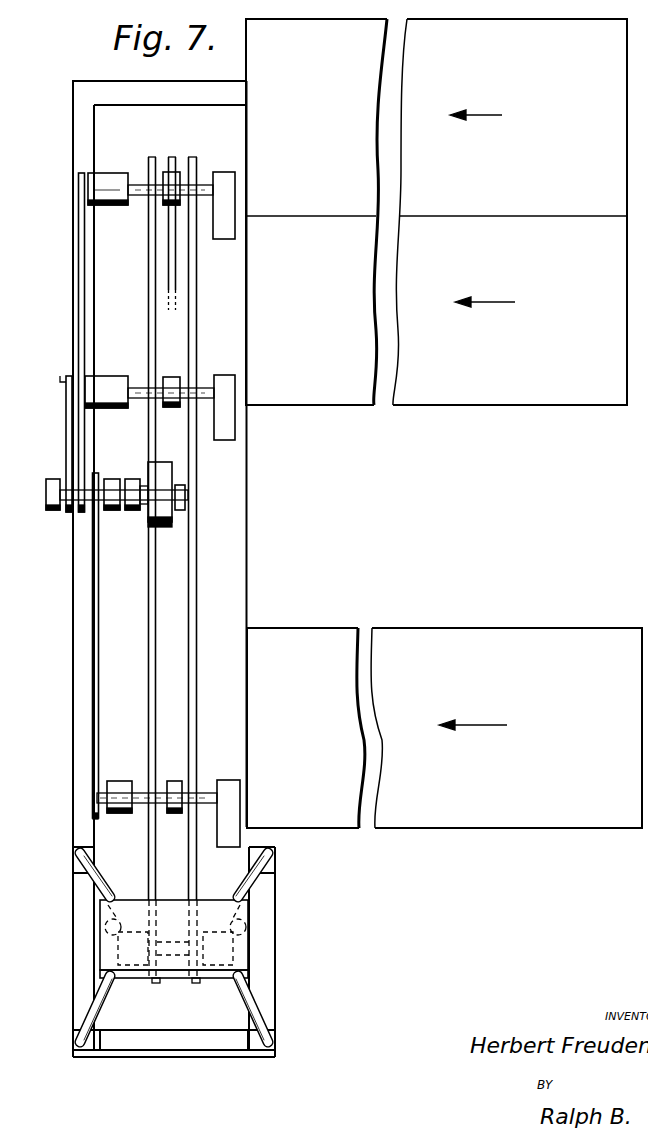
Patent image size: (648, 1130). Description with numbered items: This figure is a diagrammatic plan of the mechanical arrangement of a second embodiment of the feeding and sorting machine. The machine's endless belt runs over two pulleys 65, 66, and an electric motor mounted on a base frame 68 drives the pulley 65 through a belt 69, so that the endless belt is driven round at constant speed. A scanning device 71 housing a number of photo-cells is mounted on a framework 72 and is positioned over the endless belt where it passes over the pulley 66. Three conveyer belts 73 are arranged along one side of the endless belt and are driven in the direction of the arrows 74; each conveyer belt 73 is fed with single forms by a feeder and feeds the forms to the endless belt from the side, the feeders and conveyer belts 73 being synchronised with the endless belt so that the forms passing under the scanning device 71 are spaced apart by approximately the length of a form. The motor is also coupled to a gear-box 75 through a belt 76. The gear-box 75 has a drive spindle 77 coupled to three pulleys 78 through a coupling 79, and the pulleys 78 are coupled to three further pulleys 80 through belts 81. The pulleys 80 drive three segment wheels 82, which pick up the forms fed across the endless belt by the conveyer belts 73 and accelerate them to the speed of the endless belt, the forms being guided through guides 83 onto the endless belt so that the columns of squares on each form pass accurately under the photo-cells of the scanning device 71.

The pulley 65 is at (149, 157).
The pulley 66 is at (160, 983).
The base frame 68 is at (96, 835).
The belt 69 is at (177, 292).
The scanning device 71 is at (174, 962).
The framework 72 is at (252, 890).
The conveyer belts 73 is at (444, 423).
The arrows 74 is at (497, 116).
The gear-box 75 is at (162, 477).
The belt 76 is at (187, 498).
The drive spindle 77 is at (145, 488).
The pulleys 78 is at (92, 522).
The coupling 79 is at (133, 512).
The pulleys 80 is at (80, 188).
The belts 81 is at (85, 283).
The segment wheels 82 is at (173, 172).
The guides 83 is at (226, 240).